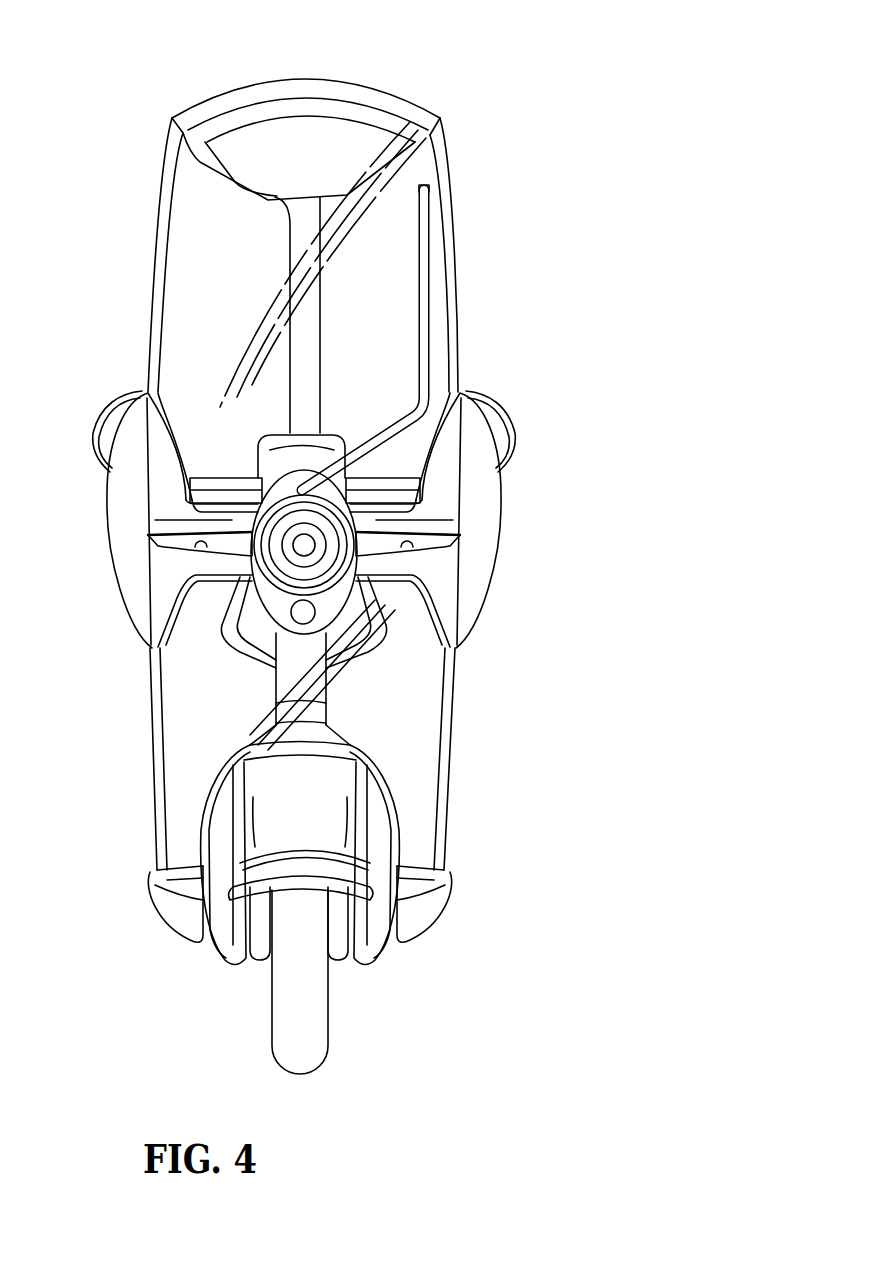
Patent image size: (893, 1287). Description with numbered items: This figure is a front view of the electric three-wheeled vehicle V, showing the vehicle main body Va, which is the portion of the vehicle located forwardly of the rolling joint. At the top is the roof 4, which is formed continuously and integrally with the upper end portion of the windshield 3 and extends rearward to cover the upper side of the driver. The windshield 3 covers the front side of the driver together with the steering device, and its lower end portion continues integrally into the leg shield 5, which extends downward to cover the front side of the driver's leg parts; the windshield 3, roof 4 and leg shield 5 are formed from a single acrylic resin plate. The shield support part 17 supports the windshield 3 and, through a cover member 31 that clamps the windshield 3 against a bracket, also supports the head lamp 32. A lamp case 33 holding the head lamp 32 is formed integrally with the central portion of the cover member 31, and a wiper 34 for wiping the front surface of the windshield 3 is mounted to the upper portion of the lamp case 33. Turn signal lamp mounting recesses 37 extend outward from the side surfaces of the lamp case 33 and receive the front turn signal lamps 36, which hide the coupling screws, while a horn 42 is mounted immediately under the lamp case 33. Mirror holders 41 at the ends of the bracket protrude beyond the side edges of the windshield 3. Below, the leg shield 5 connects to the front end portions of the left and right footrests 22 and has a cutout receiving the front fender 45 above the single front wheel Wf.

The roof 4 is at (330, 80).
The electric three-wheeled vehicle V is at (486, 104).
The vehicle main body Va is at (469, 183).
The windshield 3 is at (378, 256).
The wiper 34 is at (426, 288).
The head lamp 32 is at (291, 515).
The shield support part 17 is at (252, 500).
The horn 42 is at (300, 618).
The cover member 31 is at (158, 573).
The mirror holders 41 is at (105, 420).
The lamp case 33 is at (183, 522).
The turn signal lamp mounting recesses 37 is at (194, 550).
The front turn signal lamps 36 is at (240, 550).
The leg shield 5 is at (420, 693).
The front fender 45 is at (380, 808).
The footrests 22 is at (180, 903).
The front wheel Wf is at (312, 1004).